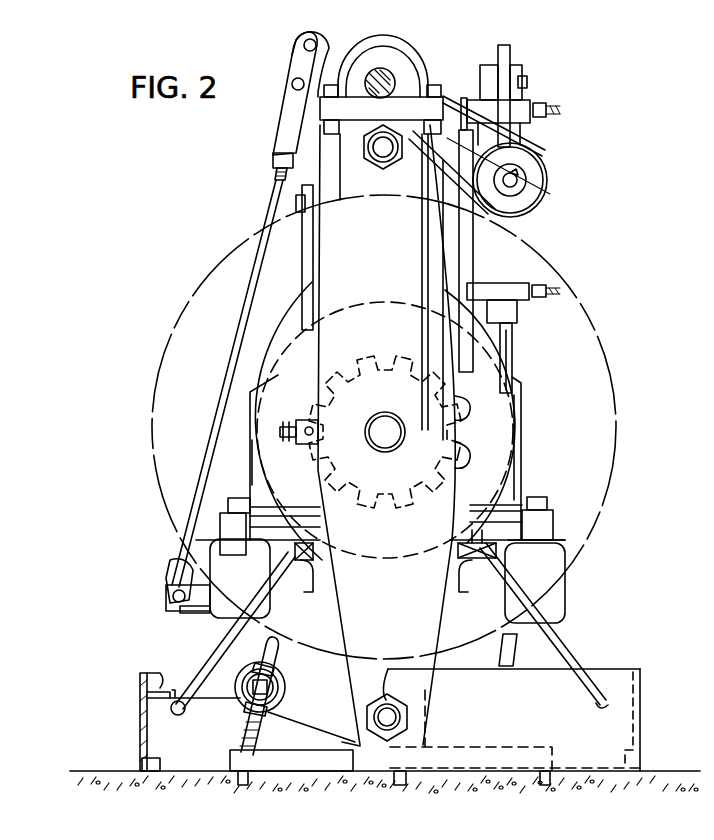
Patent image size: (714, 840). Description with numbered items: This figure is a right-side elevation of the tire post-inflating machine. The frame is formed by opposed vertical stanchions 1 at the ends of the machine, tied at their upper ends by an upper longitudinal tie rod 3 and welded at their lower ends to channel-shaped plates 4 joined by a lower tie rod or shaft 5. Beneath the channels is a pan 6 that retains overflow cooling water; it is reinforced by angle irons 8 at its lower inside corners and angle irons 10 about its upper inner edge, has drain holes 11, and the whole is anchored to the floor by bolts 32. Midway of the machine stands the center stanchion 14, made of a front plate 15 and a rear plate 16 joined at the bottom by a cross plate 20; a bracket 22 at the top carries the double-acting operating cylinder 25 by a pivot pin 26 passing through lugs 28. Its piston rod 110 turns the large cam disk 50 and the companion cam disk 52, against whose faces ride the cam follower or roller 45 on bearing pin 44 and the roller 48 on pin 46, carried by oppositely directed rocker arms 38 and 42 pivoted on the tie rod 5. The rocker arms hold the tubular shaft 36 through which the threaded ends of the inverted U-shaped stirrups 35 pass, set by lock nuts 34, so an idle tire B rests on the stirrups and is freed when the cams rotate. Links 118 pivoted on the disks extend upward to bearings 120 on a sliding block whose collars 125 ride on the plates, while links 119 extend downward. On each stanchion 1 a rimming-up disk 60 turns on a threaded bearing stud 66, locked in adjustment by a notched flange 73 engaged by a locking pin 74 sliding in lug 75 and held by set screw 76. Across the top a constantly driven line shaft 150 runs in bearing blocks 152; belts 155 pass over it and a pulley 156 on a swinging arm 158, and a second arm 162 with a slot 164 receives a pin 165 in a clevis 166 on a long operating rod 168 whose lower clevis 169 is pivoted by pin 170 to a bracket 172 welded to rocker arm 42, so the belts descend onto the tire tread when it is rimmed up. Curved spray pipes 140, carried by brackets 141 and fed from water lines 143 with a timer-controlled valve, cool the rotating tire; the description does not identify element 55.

The vertical stanchions 1 is at (422, 267).
The upper longitudinal tie rod 3 is at (384, 150).
The channel-shaped plates 4 is at (323, 762).
The lower longitudinal tie rod or shaft 5 is at (398, 716).
The pan 6 is at (642, 712).
The angle irons 8 is at (143, 765).
The angle irons 10 is at (140, 682).
The drain holes 11 is at (400, 787).
The center stanchion 14 is at (316, 142).
The front plate 15 is at (334, 160).
The rear plate 16 is at (443, 278).
The cross plate 20 is at (344, 745).
The bracket 22 is at (488, 77).
The operating cylinder 25 is at (532, 291).
The pivot pin 26 is at (528, 82).
The lugs 28 is at (488, 84).
The bolts 32 is at (244, 787).
The lock nuts 34 is at (253, 710).
The inverted U-shaped rods or stirrups 35 is at (276, 642).
The front tubular shaft 36 is at (248, 700).
The rocker arms 38 is at (567, 605).
The rocker arms 42 is at (222, 620).
The bearing pin 44 is at (537, 497).
The cam follower or roller 45 is at (548, 515).
The pin 46 is at (230, 505).
The cam follower or roller 48 is at (222, 522).
The cam disk 50 is at (548, 440).
The cam disk 52 is at (250, 460).
The side plates 55 is at (248, 472).
The outer rimming-up closure or disk 60 is at (500, 412).
The bearing stud 66 is at (383, 443).
The flange 73 is at (470, 398).
The locking pin 74 is at (308, 437).
The lug 75 is at (316, 420).
The set screw 76 is at (280, 431).
The tire B is at (552, 293).
The piston rod 110 is at (514, 346).
The upwardly extending link 118 is at (305, 250).
The downwardly extending link 119 is at (310, 590).
The bearings 120 is at (296, 203).
The collars 125 is at (273, 162).
The spray pipes 140 is at (190, 684).
The brackets 141 is at (260, 540).
The water lines 143 is at (316, 560).
The line shaft 150 is at (385, 72).
The bearing blocks 152 is at (408, 62).
The belts 155 is at (464, 100).
The pulley 156 is at (538, 170).
The swinging arm 158 is at (488, 143).
The arm 162 is at (328, 62).
The slot 164 is at (305, 42).
The pin 165 is at (292, 82).
The clevis 166 is at (288, 108).
The operating rod 168 is at (202, 480).
The clevis 169 is at (173, 588).
The pin 170 is at (166, 600).
The bracket 172 is at (196, 613).